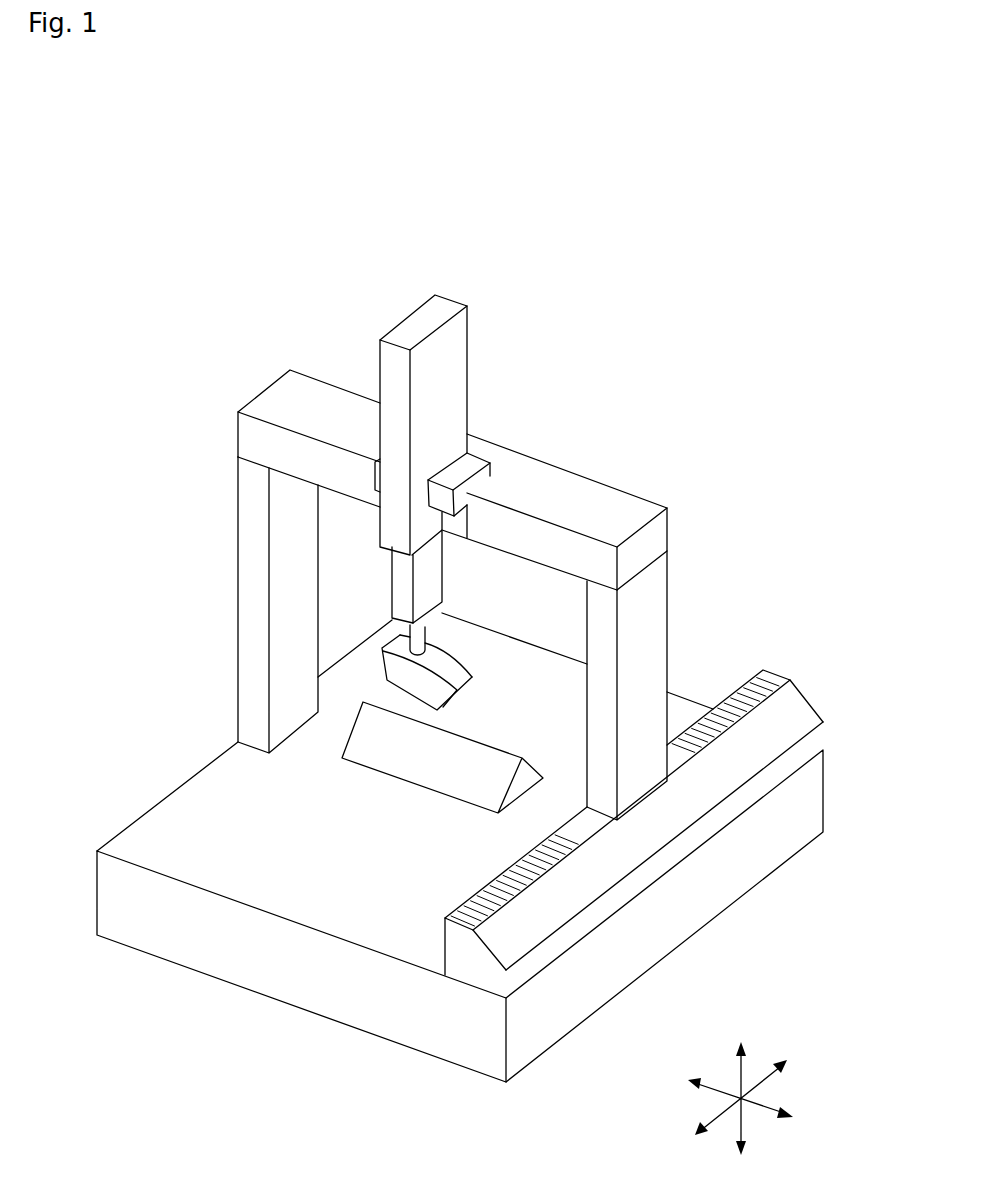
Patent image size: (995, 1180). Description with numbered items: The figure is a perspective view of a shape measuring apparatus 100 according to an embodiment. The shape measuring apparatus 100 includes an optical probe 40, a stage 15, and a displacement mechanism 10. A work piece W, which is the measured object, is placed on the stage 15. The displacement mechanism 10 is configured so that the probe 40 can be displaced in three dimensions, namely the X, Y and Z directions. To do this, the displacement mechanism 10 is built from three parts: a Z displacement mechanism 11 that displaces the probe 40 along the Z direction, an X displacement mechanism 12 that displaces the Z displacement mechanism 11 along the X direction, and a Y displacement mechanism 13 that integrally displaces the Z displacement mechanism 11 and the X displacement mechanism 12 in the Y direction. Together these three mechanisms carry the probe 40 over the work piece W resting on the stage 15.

The shape measuring apparatus 100 is at (463, 256).
The displacement mechanism 10 is at (792, 362).
The Z displacement mechanism 11 is at (443, 378).
The X displacement mechanism 12 is at (607, 500).
The Y displacement mechanism 13 is at (762, 662).
The stage 15 is at (183, 811).
The optical probe 40 is at (472, 663).
The work piece W is at (443, 773).